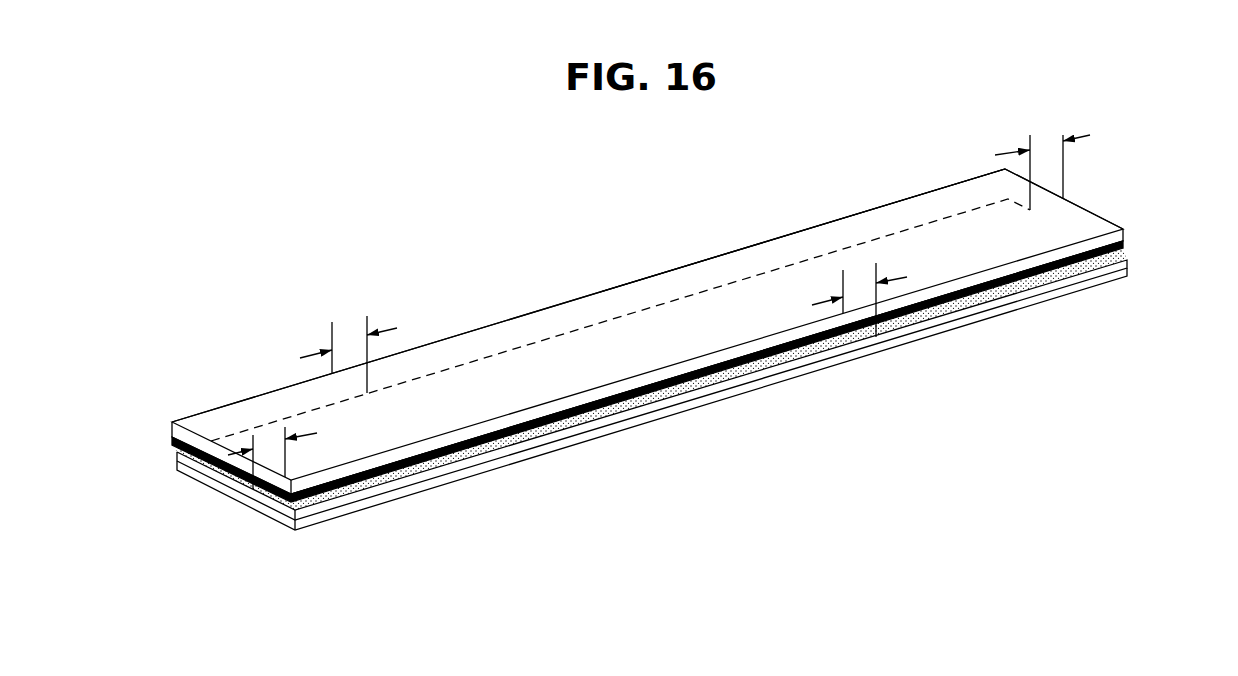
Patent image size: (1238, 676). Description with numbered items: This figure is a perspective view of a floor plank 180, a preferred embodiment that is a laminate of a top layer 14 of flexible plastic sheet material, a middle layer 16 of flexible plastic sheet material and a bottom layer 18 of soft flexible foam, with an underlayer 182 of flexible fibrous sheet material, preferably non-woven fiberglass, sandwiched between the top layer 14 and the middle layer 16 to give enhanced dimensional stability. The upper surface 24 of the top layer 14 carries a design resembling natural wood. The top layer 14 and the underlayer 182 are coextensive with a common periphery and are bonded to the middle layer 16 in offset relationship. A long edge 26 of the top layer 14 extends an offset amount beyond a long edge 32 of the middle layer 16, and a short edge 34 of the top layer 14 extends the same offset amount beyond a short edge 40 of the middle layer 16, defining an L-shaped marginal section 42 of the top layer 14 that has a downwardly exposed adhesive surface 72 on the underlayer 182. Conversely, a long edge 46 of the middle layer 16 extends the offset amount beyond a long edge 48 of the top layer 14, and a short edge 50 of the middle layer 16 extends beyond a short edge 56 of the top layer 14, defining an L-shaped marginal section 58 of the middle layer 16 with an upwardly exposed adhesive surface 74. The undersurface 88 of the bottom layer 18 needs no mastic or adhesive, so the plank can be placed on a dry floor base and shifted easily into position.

The floor plank 180 is at (652, 228).
The top layer 14 is at (1113, 220).
The middle layer 16 is at (1129, 267).
The bottom layer 18 is at (1130, 278).
The short edge of the middle layer 40 is at (1125, 254).
The L-shaped marginal section of the top layer 42 is at (795, 243).
The downwardly exposed adhesive surface 72 is at (520, 331).
The upper surface of the top layer 24 is at (591, 358).
The long edge of the top layer 26 is at (253, 396).
The short edge of the top layer 34 is at (1090, 212).
The long edge of the middle layer 32 is at (183, 452).
The short edge of the middle layer 50 is at (208, 471).
The short edge of the top layer 56 is at (252, 486).
The undersurface of the bottom foam layer 88 is at (407, 494).
The L-shaped marginal section of the middle layer 58 is at (460, 454).
The upwardly exposed adhesive surface 74 is at (537, 431).
The long edge of the middle layer 46 is at (641, 413).
The long edge of the top layer 48 is at (723, 355).
The underlayer 182 is at (900, 313).